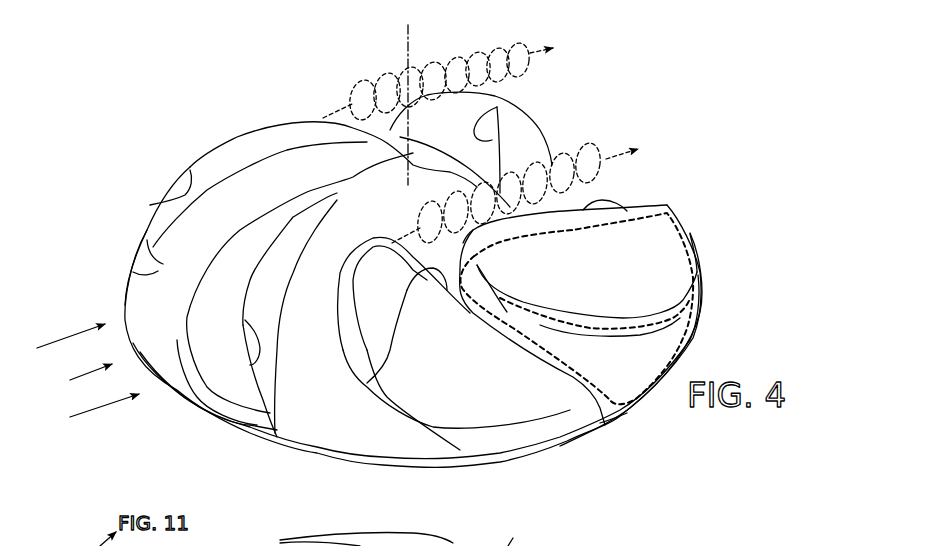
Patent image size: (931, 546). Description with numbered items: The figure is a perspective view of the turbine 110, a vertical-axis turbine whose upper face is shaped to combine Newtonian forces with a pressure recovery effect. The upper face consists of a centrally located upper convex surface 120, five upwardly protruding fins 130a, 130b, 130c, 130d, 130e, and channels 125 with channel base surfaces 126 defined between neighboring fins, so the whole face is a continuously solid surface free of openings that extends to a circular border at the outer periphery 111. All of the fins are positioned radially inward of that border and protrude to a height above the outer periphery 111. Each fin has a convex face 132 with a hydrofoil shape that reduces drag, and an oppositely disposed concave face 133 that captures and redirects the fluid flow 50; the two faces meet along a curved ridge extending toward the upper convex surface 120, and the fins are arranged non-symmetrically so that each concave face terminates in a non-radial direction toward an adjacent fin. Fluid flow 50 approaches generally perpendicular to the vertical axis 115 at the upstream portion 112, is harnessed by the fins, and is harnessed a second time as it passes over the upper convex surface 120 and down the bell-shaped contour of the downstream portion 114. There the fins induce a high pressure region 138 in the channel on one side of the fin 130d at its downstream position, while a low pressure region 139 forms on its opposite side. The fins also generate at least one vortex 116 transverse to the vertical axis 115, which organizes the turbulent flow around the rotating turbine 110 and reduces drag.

In FIG. 4, the turbine 110 is at (160, 133).
In FIG. 4, the outer periphery 111 is at (117, 298).
In FIG. 4, the upstream portion 112 is at (155, 418).
In FIG. 4, the downstream portion 114 is at (676, 190).
In FIG. 4, the vertical axis 115 is at (404, 45).
In FIG. 4, the vortex 116 is at (513, 33).
In FIG. 4, the upper convex surface 120 is at (367, 183).
In FIG. 4, the fin 130a is at (260, 353).
In FIG. 4, the fin 130b is at (150, 205).
In FIG. 4, the fin 130c is at (510, 102).
In FIG. 4, the fin 130d is at (613, 213).
In FIG. 4, the fin 130e is at (367, 383).
In FIG. 4, the high pressure region 138 is at (640, 192).
In FIG. 4, the low pressure region 139 is at (627, 413).
In FIG. 4, the fluid flow 50 is at (88, 370).
In FIG. 11, the convex face 132 is at (308, 541).
In FIG. 11, the channel 125 is at (457, 540).
In FIG. 11, the channel base surface 126 is at (511, 533).
In FIG. 11, the concave face 133 is at (557, 540).